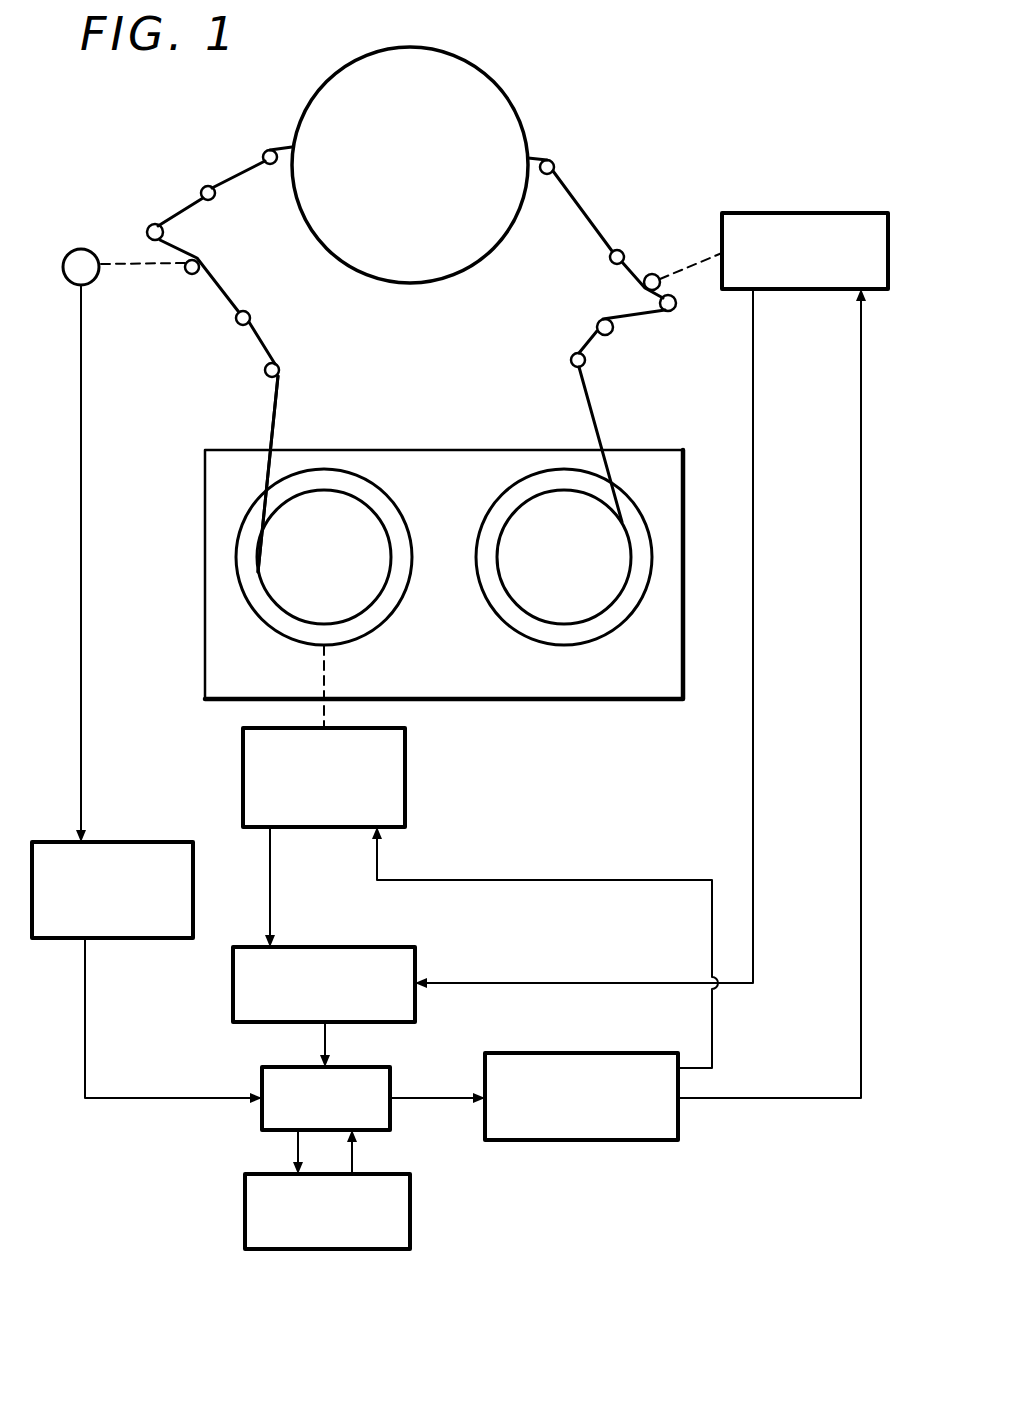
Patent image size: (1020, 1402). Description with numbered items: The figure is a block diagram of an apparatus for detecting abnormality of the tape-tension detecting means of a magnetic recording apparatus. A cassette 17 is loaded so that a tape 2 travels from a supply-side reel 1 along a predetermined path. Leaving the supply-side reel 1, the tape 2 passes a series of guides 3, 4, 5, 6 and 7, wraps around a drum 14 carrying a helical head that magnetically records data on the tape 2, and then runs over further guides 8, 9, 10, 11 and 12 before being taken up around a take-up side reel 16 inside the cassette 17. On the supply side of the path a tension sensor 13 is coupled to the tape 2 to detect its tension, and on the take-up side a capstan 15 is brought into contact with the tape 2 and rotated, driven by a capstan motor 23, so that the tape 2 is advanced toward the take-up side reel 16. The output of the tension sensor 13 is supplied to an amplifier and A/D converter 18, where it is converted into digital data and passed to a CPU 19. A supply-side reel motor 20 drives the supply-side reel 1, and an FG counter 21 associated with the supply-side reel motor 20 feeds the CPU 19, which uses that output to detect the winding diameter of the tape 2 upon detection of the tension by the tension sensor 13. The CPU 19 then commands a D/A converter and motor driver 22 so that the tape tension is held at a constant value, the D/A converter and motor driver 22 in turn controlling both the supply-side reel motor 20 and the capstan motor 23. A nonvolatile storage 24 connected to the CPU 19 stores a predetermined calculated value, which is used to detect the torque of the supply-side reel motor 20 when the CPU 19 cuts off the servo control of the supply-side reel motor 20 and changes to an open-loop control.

The supply-side reel 1 is at (268, 567).
The tape 2 is at (276, 420).
The guide 3 is at (281, 370).
The guide 4 is at (235, 320).
The guide 5 is at (165, 232).
The guide 6 is at (205, 185).
The guide 7 is at (268, 148).
The guide 8 is at (548, 160).
The guide 9 is at (618, 250).
The guide 10 is at (670, 311).
The guide 11 is at (612, 333).
The guide 12 is at (585, 366).
The tension sensor 13 is at (78, 248).
The drum 14 is at (482, 88).
The capstan 15 is at (652, 274).
The take-up side reel 16 is at (617, 572).
The cassette 17 is at (588, 683).
The amplifier and A/D converter 18 is at (120, 842).
The CPU 19 is at (390, 1072).
The supply-side reel motor 20 is at (243, 770).
The FG counter 21 is at (310, 947).
The D/A converter and motor driver 22 is at (580, 1053).
The capstan motor 23 is at (785, 213).
The nonvolatile storage 24 is at (405, 1174).